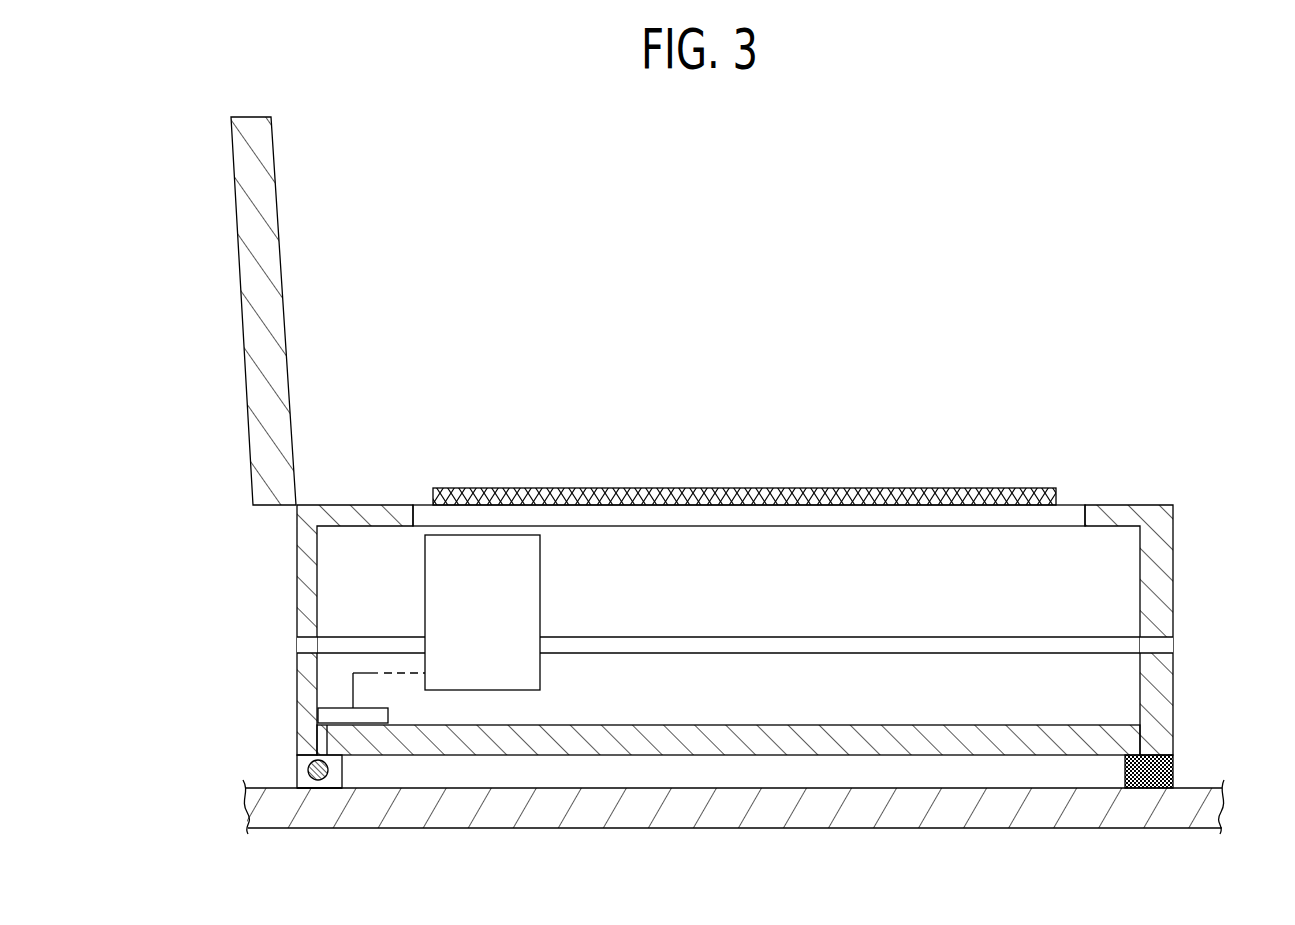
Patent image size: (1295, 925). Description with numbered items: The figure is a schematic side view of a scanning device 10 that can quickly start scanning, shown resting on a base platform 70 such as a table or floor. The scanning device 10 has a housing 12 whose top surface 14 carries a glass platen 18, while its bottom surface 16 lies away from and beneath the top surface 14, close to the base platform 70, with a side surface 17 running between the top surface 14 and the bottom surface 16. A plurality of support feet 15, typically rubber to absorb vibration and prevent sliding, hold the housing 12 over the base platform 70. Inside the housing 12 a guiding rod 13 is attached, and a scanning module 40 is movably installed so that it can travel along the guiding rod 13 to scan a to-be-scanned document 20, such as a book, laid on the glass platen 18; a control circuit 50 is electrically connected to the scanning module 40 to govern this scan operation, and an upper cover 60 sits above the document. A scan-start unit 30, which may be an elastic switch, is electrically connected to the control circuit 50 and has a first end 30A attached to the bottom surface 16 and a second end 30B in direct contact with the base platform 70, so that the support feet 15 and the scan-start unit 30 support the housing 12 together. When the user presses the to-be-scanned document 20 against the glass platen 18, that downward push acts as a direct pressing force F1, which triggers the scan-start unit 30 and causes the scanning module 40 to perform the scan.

The scanning device 10 is at (198, 522).
The housing 12 is at (297, 608).
The guiding rod 13 is at (714, 648).
The top surface 14 is at (1115, 508).
The support feet 15 is at (1172, 765).
The bottom surface 16 is at (615, 755).
The side surface 17 is at (297, 660).
The glass platen 18 is at (1067, 520).
The to-be-scanned document 20 is at (620, 488).
The scan-start unit 30 is at (303, 772).
The first end 30A is at (310, 762).
The second end 30B is at (292, 822).
The scanning module 40 is at (528, 585).
The control circuit 50 is at (297, 710).
The upper cover 60 is at (272, 348).
The base platform 70 is at (262, 812).
The direct pressing force F1 is at (733, 466).